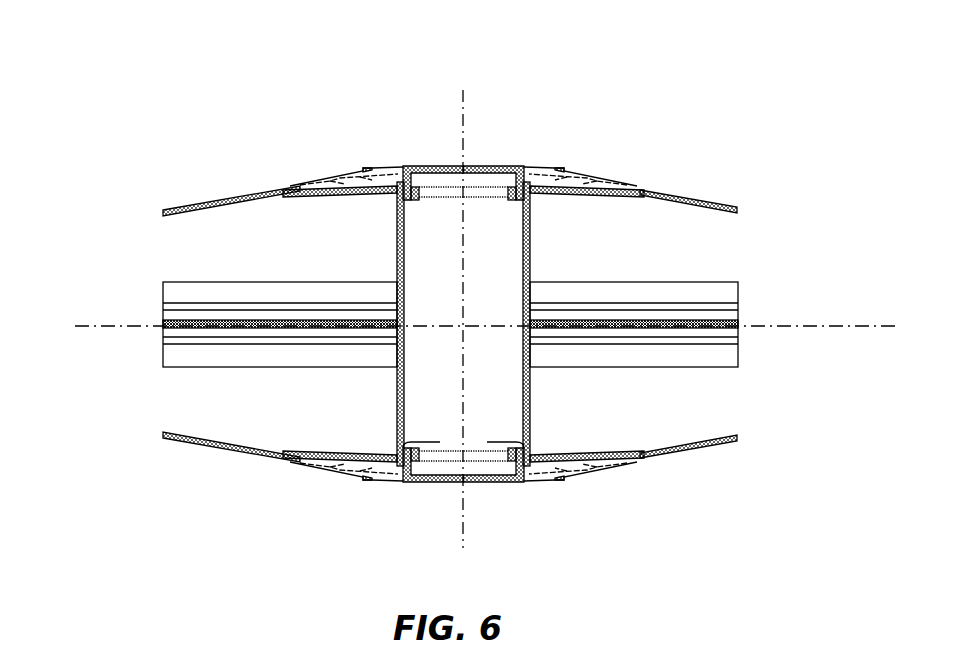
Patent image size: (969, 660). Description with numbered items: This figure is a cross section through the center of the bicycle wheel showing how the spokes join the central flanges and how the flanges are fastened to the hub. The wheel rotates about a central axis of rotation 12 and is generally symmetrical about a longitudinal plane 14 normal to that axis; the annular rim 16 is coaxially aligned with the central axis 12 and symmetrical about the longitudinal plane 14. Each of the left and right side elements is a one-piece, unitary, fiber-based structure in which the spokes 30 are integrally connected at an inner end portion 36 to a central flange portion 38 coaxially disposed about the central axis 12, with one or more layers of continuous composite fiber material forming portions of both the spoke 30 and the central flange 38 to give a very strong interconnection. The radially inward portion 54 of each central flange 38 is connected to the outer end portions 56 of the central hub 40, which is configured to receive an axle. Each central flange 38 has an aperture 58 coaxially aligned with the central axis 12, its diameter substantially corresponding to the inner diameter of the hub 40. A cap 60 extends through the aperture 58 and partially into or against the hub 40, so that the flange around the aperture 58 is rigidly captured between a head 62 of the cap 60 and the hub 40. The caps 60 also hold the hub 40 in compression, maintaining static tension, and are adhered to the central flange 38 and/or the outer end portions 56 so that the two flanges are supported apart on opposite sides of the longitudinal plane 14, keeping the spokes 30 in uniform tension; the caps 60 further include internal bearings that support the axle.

The central axis of rotation 12 is at (455, 118).
The longitudinal plane 14 is at (100, 320).
The annular rim 16 is at (167, 358).
The spokes 30 is at (718, 203).
The inner end portion 36 is at (655, 192).
The central flange portion 38 is at (337, 183).
The central hub 40 is at (395, 408).
The radially inward portion 54 is at (540, 472).
The outer end portions 56 is at (398, 207).
The aperture 58 is at (407, 460).
The cap 60 is at (525, 165).
The head 62 is at (560, 157).